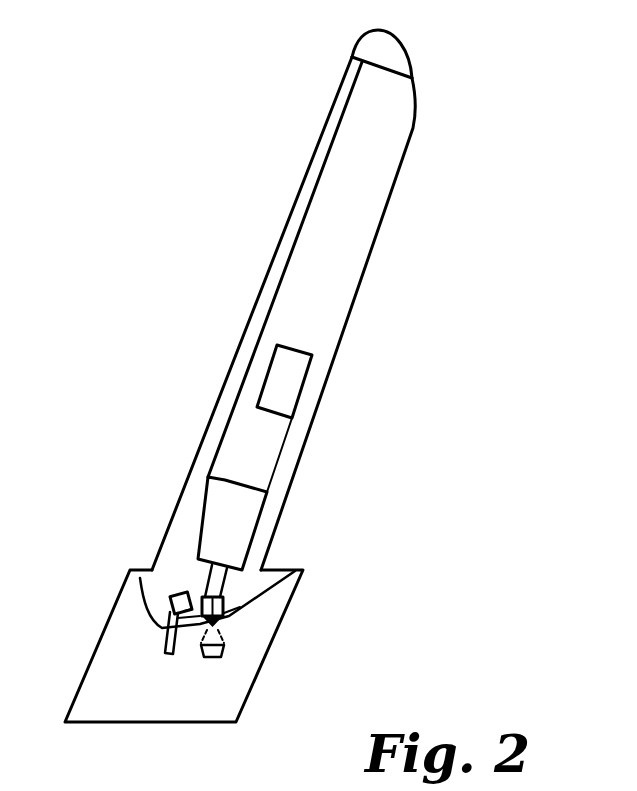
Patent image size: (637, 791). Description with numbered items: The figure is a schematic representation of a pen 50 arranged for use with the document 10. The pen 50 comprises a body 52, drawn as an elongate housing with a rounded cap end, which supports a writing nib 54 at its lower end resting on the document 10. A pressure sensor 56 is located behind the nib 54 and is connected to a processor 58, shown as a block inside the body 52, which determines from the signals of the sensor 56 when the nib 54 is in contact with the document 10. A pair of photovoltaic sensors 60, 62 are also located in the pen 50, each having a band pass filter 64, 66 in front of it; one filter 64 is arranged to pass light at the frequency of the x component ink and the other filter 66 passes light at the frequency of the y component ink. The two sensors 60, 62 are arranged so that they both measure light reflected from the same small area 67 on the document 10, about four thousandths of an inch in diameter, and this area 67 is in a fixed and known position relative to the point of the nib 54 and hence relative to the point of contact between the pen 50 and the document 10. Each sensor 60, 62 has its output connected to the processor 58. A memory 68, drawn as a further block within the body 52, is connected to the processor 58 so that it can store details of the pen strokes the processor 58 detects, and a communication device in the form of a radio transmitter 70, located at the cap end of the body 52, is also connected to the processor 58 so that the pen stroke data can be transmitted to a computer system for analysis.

The document 10 is at (271, 641).
The pen 50 is at (403, 185).
The body 52 is at (362, 295).
The writing nib 54 is at (164, 643).
The pressure sensor 56 is at (172, 600).
The processor 58 is at (260, 521).
The photovoltaic sensor 60 is at (201, 597).
The photovoltaic sensor 62 is at (224, 603).
The band pass filter 64 is at (188, 612).
The band pass filter 66 is at (240, 607).
The sensed area 67 is at (218, 658).
The memory 68 is at (299, 390).
The radio transmitter 70 is at (398, 62).